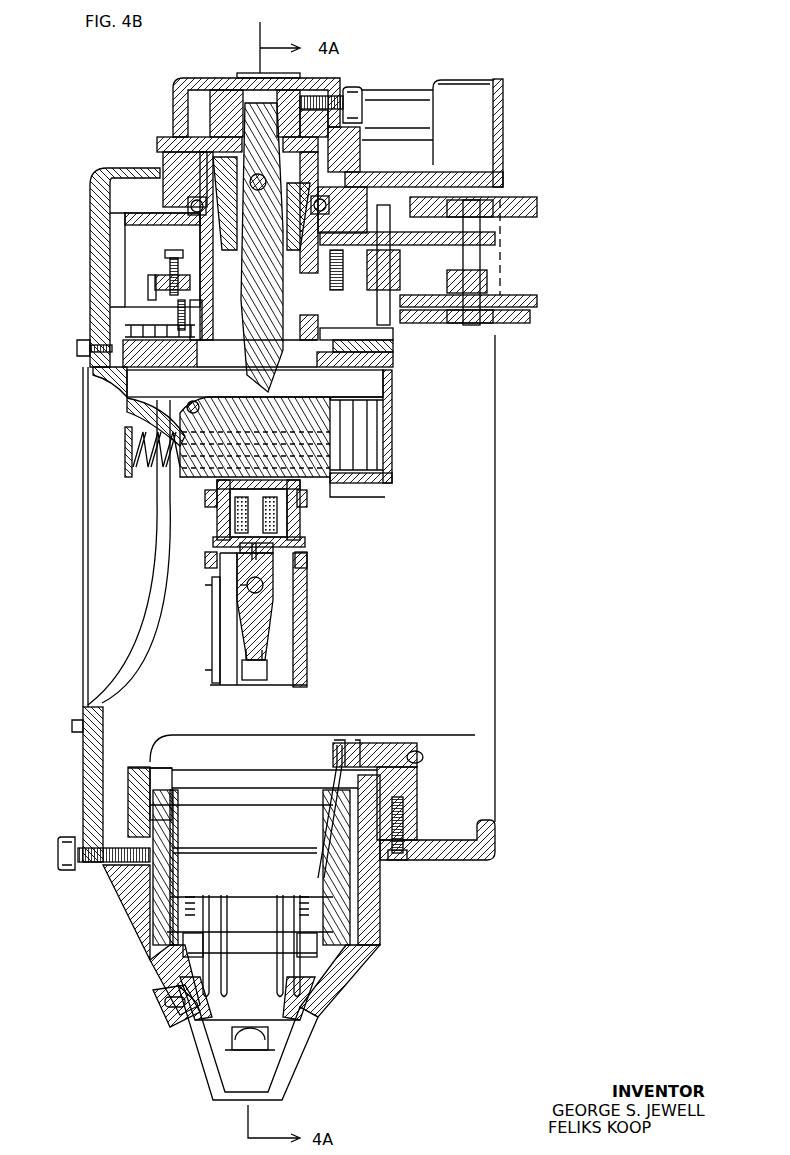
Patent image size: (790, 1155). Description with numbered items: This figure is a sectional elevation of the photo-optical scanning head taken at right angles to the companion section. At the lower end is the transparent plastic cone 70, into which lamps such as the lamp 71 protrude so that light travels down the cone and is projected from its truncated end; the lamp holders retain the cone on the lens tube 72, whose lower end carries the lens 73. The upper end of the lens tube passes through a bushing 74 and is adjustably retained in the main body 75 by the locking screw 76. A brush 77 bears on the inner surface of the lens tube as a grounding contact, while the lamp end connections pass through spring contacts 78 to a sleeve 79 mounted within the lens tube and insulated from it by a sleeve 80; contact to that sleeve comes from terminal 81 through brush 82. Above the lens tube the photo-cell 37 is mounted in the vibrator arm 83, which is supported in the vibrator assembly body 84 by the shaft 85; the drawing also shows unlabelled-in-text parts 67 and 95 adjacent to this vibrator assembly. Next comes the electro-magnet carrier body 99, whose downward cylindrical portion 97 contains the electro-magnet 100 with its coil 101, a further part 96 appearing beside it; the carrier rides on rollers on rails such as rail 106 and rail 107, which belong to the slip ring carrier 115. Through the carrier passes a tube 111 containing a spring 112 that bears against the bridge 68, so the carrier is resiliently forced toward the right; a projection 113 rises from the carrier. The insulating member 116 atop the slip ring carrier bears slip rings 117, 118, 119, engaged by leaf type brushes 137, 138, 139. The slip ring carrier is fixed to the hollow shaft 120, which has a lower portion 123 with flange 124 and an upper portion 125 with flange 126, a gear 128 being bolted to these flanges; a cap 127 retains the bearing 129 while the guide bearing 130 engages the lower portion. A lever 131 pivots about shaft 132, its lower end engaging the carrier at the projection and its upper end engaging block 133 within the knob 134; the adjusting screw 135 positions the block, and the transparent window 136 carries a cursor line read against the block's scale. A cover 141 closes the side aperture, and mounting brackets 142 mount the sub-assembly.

The transparent window 136 is at (247, 78).
The knob 134 is at (175, 87).
The block 133 is at (212, 110).
The adjusting screw 135 is at (353, 86).
The mounting brackets 142 is at (503, 93).
The cap 127 is at (160, 141).
The main body 75 is at (92, 190).
The bearing 129 is at (190, 232).
The upper portion of hollow shaft 125 is at (198, 243).
The flange 126 is at (170, 258).
The flange 124 is at (160, 280).
The gear 128 is at (157, 285).
The leaf type brush 139 is at (177, 310).
The leaf type brush 138 is at (187, 328).
The leaf type brush 137 is at (133, 333).
The shaft 132 is at (246, 222).
The hollow shaft 120 is at (198, 283).
The guide bearing 130 is at (193, 302).
The lever 131 is at (273, 283).
The lower portion of hollow shaft 123 is at (320, 302).
The slip ring 117 is at (393, 335).
The slip ring 118 is at (392, 347).
The slip ring 119 is at (392, 357).
The projection 113 is at (243, 385).
The insulating member 116 is at (392, 362).
The rail 106 is at (378, 392).
The bridge 68 is at (128, 448).
The slip ring carrier 115 is at (385, 440).
The rail 107 is at (378, 470).
The spring 112 is at (157, 467).
The tube 111 is at (190, 473).
The electro-magnet carrier body 99 is at (370, 493).
The electro-magnet 100 is at (253, 523).
The coil 101 is at (275, 523).
The flange 96 is at (310, 502).
The cylindrical portion 97 is at (300, 537).
The cover 141 is at (85, 570).
The plate 67 is at (237, 582).
The cap 95 is at (272, 550).
The shaft 85 is at (263, 585).
The vibrator assembly body 84 is at (303, 603).
The vibrator arm 83 is at (263, 635).
The photo-cell 37 is at (255, 683).
The brush 77 is at (150, 768).
The brush 82 is at (333, 760).
The terminal 81 is at (423, 755).
The locking screw 76 is at (73, 840).
The sleeve 79 is at (210, 850).
The spring contacts 78 is at (220, 895).
The bushing 74 is at (150, 905).
The sleeve 80 is at (350, 920).
The lens tube 72 is at (347, 970).
The lamp 71 is at (163, 1008).
The transparent plastic cone 70 is at (208, 1060).
The lens 73 is at (252, 1045).